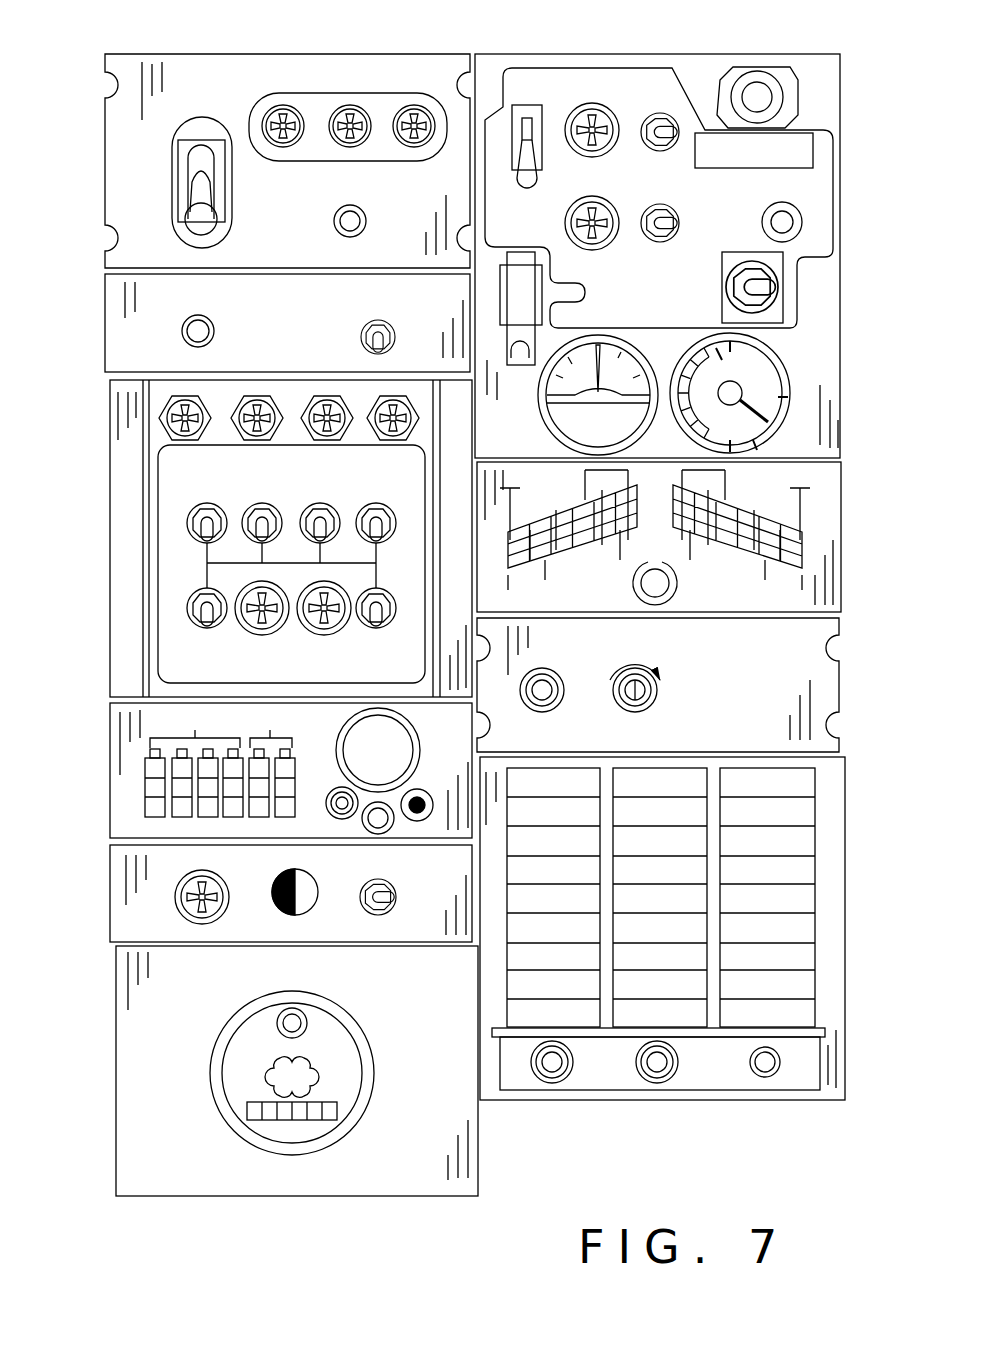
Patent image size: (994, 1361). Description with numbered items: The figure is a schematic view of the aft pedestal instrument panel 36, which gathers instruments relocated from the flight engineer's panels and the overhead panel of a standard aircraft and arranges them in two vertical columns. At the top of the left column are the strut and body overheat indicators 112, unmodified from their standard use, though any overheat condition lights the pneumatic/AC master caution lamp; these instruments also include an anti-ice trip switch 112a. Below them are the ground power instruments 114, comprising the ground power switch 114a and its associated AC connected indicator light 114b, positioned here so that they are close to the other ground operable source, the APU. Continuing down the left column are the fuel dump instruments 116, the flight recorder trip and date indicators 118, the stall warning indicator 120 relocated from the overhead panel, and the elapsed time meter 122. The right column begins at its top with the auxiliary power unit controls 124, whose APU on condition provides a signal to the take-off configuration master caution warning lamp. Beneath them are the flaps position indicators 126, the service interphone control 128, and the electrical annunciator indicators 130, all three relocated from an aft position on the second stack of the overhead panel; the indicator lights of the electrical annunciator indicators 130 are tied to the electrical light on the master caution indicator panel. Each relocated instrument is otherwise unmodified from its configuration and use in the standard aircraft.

The aft pedestal instrument panel 36 is at (633, 50).
The strut and body overheat indicators 112 is at (223, 66).
The anti-ice trip switch 112a is at (158, 161).
The ground power instruments 114 is at (148, 297).
The ground power switch 114a is at (346, 346).
The AC connected indicator light 114b is at (177, 337).
The fuel dump instruments 116 is at (134, 557).
The flight recorder trip and date indicators 118 is at (125, 782).
The stall warning indicator 120 is at (163, 892).
The elapsed time meter 122 is at (205, 1057).
The auxiliary power unit (APU) controls 124 is at (818, 275).
The flaps position indicators 126 is at (820, 535).
The service interphone control 128 is at (793, 665).
The electrical annunciator indicators 130 is at (820, 870).